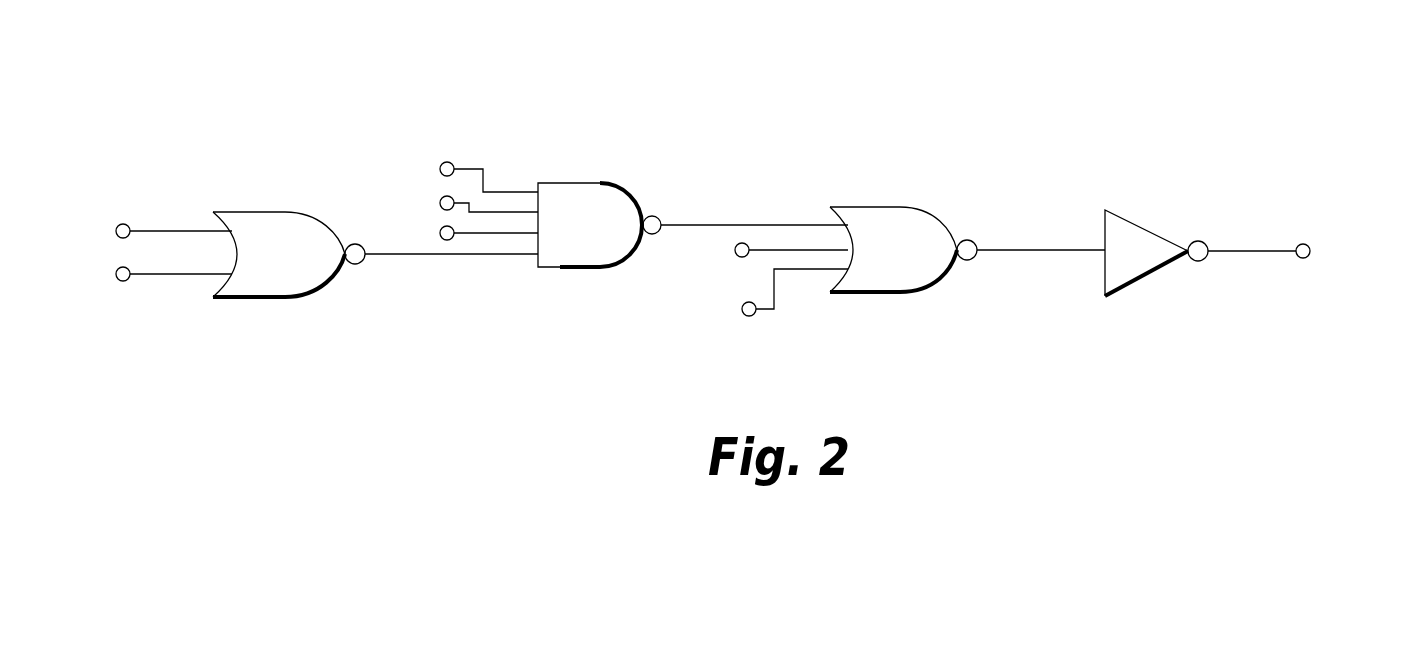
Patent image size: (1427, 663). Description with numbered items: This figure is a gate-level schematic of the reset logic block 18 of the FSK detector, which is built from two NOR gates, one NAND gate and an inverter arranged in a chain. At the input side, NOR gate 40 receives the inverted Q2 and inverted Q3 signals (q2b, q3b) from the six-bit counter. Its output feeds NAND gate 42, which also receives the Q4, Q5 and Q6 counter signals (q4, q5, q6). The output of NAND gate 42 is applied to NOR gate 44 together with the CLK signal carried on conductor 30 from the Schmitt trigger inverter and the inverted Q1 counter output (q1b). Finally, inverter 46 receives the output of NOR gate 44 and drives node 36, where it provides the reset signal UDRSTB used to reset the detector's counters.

The reset logic block 18 is at (333, 91).
The conductor 30 is at (743, 243).
The node 36 is at (1310, 258).
The NOR gate 40 is at (295, 298).
The NAND gate 42 is at (610, 268).
The NOR gate 44 is at (898, 292).
The inverter 46 is at (1147, 273).